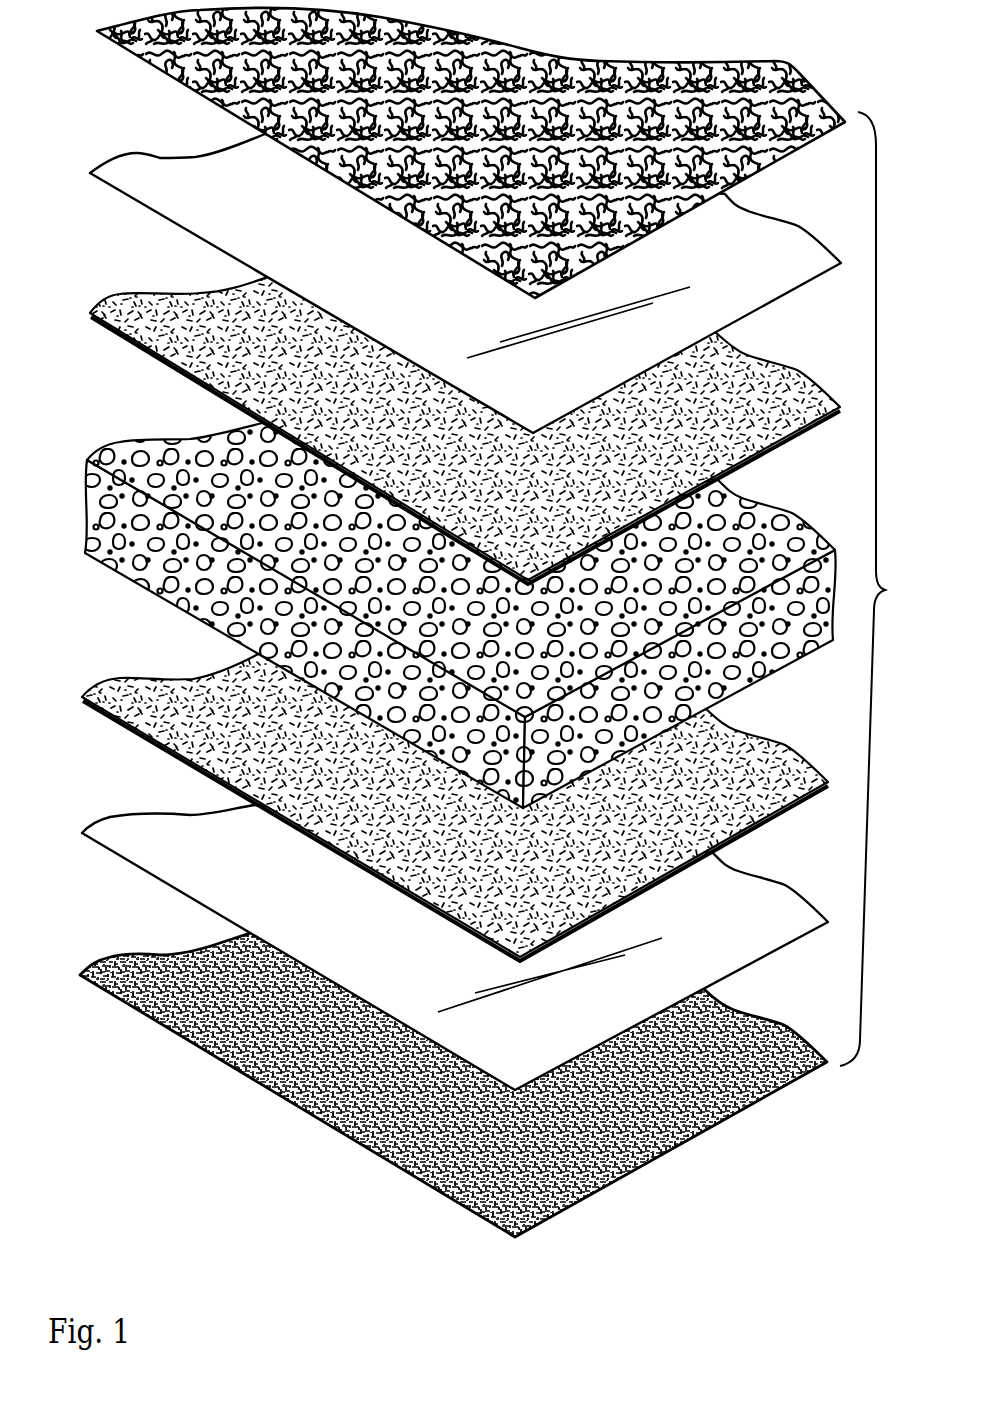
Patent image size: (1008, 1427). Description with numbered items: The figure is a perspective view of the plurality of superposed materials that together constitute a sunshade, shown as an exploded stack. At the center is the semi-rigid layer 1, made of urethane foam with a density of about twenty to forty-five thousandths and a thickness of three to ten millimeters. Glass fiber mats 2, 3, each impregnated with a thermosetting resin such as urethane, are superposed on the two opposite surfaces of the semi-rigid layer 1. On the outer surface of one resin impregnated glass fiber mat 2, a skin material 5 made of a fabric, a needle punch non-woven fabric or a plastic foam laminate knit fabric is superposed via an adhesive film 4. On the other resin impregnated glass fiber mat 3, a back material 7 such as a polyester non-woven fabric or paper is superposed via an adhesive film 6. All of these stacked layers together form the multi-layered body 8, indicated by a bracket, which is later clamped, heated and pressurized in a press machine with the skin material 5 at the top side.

The semi-rigid layer 1 is at (76, 508).
The glass fiber mat 2 is at (145, 723).
The glass fiber mat 3 is at (146, 337).
The adhesive film 4 is at (147, 858).
The skin material 5 is at (144, 1001).
The adhesive film 6 is at (146, 201).
The back material 7 is at (153, 62).
The multi-layered body 8 is at (872, 589).